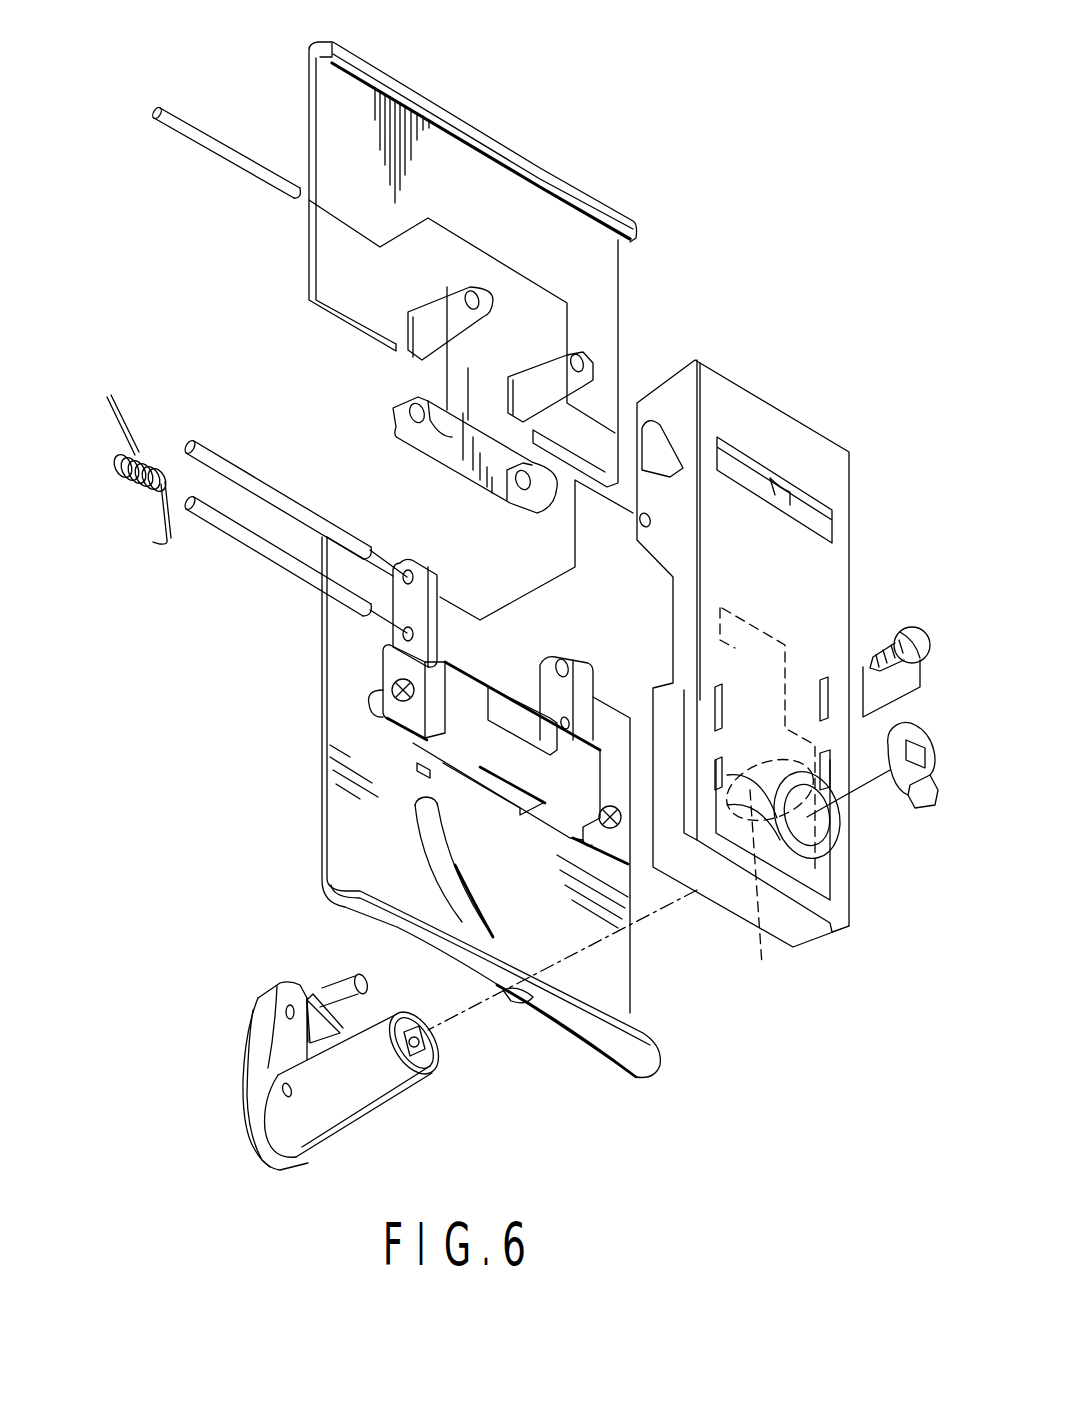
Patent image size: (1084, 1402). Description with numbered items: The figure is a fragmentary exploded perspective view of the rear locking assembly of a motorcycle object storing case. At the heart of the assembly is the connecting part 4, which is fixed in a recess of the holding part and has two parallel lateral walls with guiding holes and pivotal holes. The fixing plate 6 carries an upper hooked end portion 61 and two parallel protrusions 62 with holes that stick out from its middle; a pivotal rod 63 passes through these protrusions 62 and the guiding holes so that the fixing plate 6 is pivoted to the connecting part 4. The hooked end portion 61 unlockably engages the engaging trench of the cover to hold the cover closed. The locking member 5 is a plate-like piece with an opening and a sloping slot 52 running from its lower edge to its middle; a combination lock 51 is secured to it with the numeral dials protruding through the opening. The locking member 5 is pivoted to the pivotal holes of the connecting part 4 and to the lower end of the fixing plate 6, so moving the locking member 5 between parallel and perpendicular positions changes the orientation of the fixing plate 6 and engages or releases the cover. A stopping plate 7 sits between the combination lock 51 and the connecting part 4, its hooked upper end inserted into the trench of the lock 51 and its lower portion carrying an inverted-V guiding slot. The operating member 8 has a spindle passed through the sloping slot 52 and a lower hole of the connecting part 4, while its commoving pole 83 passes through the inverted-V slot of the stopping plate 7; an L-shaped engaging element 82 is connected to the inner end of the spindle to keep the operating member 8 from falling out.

The connecting part 4 is at (760, 420).
The locking member 5 is at (343, 672).
The combination lock 51 is at (467, 693).
The sloping slot 52 is at (432, 833).
The fixing plate 6 is at (605, 297).
The upper hooked end portion 61 is at (533, 173).
The protrusions 62 is at (428, 323).
The pivotal rod 63 is at (217, 140).
The stopping plate 7 is at (757, 955).
The operating member 8 is at (255, 1037).
The L-shaped engaging element 82 is at (910, 800).
The commoving pole 83 is at (340, 990).